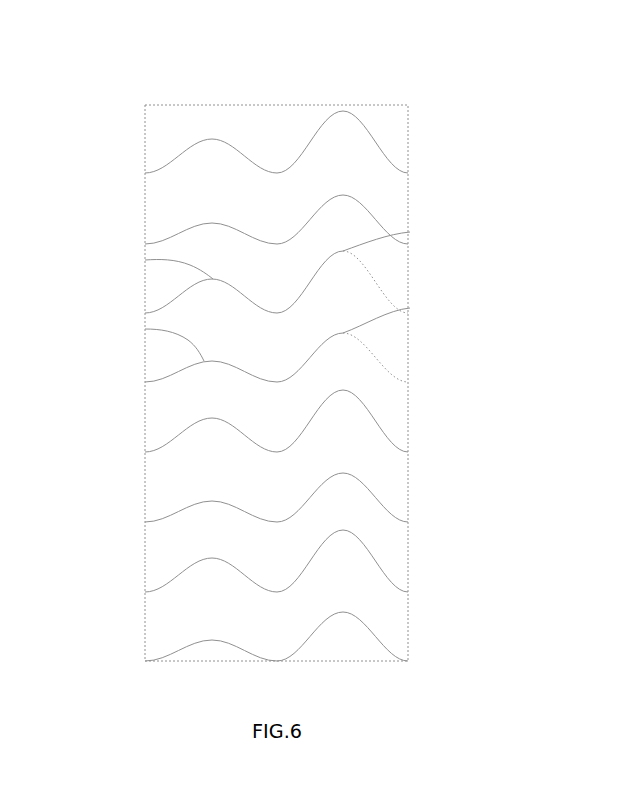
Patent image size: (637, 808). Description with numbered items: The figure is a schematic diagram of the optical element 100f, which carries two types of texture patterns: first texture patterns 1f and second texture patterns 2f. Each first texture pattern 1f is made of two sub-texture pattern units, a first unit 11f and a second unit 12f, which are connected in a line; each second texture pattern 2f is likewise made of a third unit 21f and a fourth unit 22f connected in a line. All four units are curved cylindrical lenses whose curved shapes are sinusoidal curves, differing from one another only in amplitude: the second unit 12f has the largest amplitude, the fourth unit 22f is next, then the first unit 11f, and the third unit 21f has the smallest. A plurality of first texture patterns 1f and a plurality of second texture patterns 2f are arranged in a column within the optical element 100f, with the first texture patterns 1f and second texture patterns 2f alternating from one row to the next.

The optical element 100f is at (297, 51).
The first texture pattern 1f is at (159, 147).
The second texture pattern 2f is at (160, 222).
The first unit 11f is at (145, 260).
The second unit 12f is at (410, 232).
The third unit 21f is at (145, 329).
The fourth unit 22f is at (410, 308).